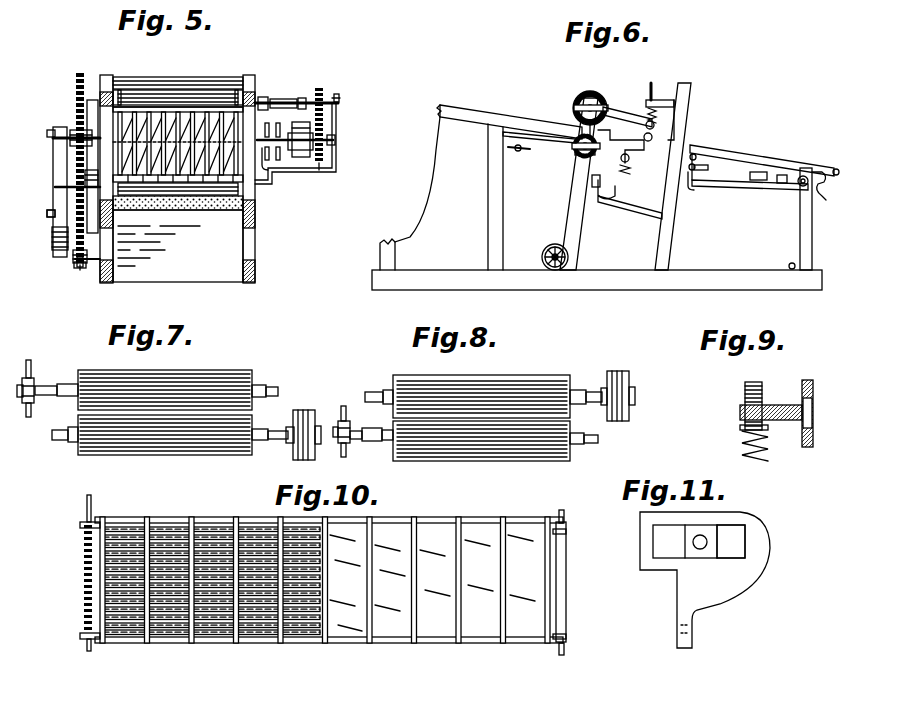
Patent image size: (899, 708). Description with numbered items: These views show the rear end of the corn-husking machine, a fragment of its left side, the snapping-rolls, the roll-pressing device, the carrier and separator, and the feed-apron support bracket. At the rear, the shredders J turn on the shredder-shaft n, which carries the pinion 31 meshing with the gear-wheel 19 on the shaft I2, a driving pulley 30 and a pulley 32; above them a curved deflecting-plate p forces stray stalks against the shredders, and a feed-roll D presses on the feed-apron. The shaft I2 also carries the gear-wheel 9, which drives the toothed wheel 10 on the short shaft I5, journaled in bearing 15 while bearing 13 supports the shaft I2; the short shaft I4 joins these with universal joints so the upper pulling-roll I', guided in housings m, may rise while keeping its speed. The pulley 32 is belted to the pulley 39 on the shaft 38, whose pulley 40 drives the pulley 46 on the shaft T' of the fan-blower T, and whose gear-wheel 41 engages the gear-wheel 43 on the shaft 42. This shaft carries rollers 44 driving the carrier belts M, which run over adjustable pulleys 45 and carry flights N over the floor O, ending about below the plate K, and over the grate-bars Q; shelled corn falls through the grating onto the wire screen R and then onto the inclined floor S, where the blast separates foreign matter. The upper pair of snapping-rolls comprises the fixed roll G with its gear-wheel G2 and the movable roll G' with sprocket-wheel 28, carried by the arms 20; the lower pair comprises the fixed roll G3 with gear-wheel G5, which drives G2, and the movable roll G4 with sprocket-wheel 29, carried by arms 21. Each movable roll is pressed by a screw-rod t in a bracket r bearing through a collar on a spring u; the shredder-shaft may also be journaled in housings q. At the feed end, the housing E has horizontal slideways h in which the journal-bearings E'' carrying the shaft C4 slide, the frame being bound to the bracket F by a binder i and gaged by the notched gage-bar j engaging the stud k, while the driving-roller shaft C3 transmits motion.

In FIG. 5, the toothed gear-wheel 19 is at (80, 74).
In FIG. 5, the pinion / collar 31 is at (80, 133).
In FIG. 9, the pinion / collar 31 is at (740, 428).
In FIG. 5, the pulley 32 is at (53, 133).
In FIG. 5, the gear-wheel 43 is at (85, 178).
In FIG. 5, the shaft 42 is at (60, 187).
In FIG. 10, the shaft 42 is at (86, 500).
In FIG. 5, the rotative shaft 38 is at (50, 216).
In FIG. 5, the pulley 39 is at (56, 243).
In FIG. 5, the pulley 40 is at (78, 258).
In FIG. 5, the pulley 46 is at (78, 270).
In FIG. 5, the fan shaft T' is at (73, 282).
In FIG. 6, the fan shaft T' is at (554, 281).
In FIG. 5, the gear-wheel 41 is at (84, 267).
In FIG. 5, the pulling-roll I' is at (178, 81).
In FIG. 5, the plate K is at (162, 110).
In FIG. 5, the feed-roll D is at (180, 80).
In FIG. 5, the curved deflecting-plate p is at (202, 100).
In FIG. 5, the shredders J is at (208, 108).
In FIG. 5, the short shaft I4 is at (284, 98).
In FIG. 5, the toothed wheel 10 is at (320, 88).
In FIG. 6, the toothed wheel 10 is at (578, 97).
In FIG. 5, the journal-bearing 15 is at (338, 99).
In FIG. 6, the journal-bearing 15 is at (575, 106).
In FIG. 5, the journal-bearing 13 is at (337, 140).
In FIG. 6, the journal-bearing 13 is at (572, 147).
In FIG. 5, the binder i is at (270, 172).
In FIG. 5, the toothed gear-wheel 9 is at (318, 166).
In FIG. 6, the toothed gear-wheel 9 is at (583, 153).
In FIG. 5, the shredder-shaft n is at (264, 178).
In FIG. 5, the pulley 30 is at (300, 158).
In FIG. 5, the wire screen R is at (182, 212).
In FIG. 5, the grate-bars Q is at (200, 190).
In FIG. 10, the grate-bars Q is at (83, 573).
In FIG. 5, the inclined floor S is at (215, 268).
In FIG. 6, the short shaft I5 is at (590, 104).
In FIG. 6, the radial arms 20 is at (625, 108).
In FIG. 6, the screw-rod t is at (653, 83).
In FIG. 9, the screw-rod t is at (745, 390).
In FIG. 6, the bracket r is at (667, 100).
In FIG. 9, the bracket r is at (783, 404).
In FIG. 6, the spring u is at (648, 112).
In FIG. 9, the spring u is at (770, 452).
In FIG. 6, the housings m is at (572, 120).
In FIG. 6, the housings q is at (518, 152).
In FIG. 6, the shaft I2 is at (596, 187).
In FIG. 6, the arms 21 is at (629, 161).
In FIG. 6, the fan-blower T is at (541, 254).
In FIG. 6, the shaft C3 is at (695, 156).
In FIG. 6, the rotative shaft C4 is at (830, 168).
In FIG. 6, the bracket F is at (692, 186).
In FIG. 6, the gage-bar j is at (752, 181).
In FIG. 6, the stud k is at (780, 185).
In FIG. 6, the housing E is at (807, 219).
In FIG. 11, the housing E is at (705, 580).
In FIG. 7, the sprocket-wheel 28 is at (30, 377).
In FIG. 7, the upper snapping-roll G' is at (156, 379).
In FIG. 7, the toothed gear-wheel G2 is at (303, 410).
In FIG. 7, the snapping-roll G is at (173, 449).
In FIG. 8, the sprocket-wheel 29 is at (343, 405).
In FIG. 8, the snapping-roll G3 is at (527, 376).
In FIG. 8, the toothed gear-wheel G5 is at (619, 371).
In FIG. 8, the snapping-roll G4 is at (533, 461).
In FIG. 10, the rollers 44 is at (80, 524).
In FIG. 10, the carrier belts M is at (342, 637).
In FIG. 10, the flights N is at (368, 625).
In FIG. 10, the floor O is at (478, 622).
In FIG. 10, the pulleys 45 is at (568, 532).
In FIG. 11, the journal-bearings E'' is at (692, 564).
In FIG. 11, the horizontal slideways h is at (736, 526).